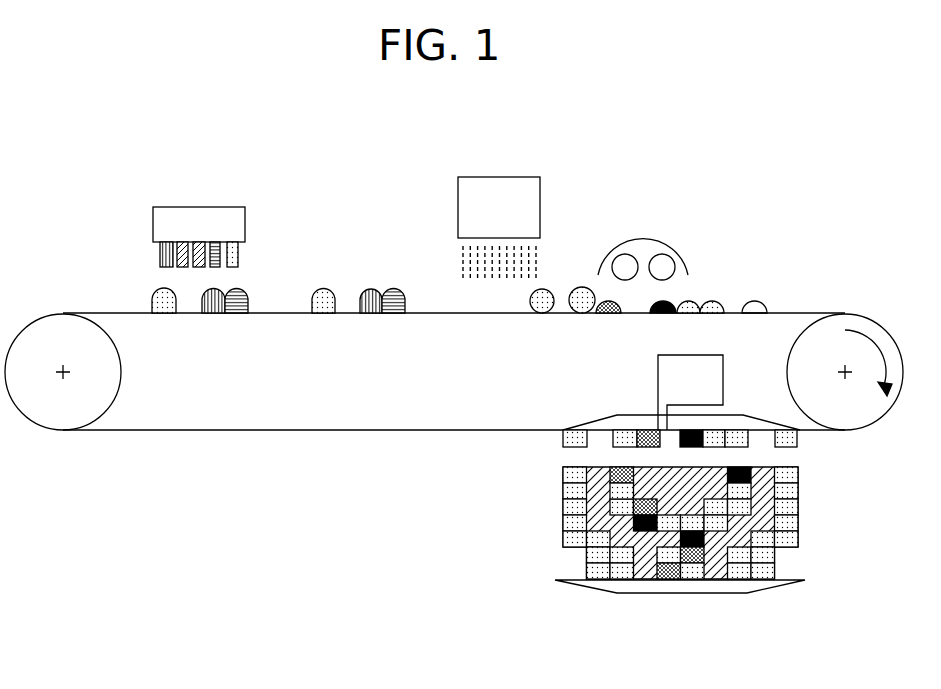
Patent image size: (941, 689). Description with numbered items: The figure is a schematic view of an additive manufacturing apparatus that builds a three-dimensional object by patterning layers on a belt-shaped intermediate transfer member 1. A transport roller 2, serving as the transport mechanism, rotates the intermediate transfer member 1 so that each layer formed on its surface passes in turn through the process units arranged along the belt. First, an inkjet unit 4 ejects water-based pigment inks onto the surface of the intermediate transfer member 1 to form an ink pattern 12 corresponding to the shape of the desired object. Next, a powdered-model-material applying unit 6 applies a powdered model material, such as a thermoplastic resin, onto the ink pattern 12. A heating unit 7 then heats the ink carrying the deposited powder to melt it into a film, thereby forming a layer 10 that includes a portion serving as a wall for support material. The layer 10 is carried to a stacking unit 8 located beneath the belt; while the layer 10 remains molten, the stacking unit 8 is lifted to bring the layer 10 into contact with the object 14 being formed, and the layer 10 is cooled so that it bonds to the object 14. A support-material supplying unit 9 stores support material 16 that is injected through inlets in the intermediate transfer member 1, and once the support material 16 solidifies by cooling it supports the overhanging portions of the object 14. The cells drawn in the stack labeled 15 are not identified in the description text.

The intermediate transfer member 1 is at (435, 314).
The transport roller 2 is at (107, 372).
The inkjet unit 4 is at (222, 215).
The powdered-model-material applying unit 6 is at (515, 181).
The heating unit 7 is at (650, 222).
The stacking unit 8 is at (642, 555).
The support-material supplying unit 9 is at (658, 375).
The layer 10 is at (740, 447).
The ink pattern 12 is at (323, 290).
The object being formed 14 is at (613, 508).
The container wall cells 15 is at (563, 492).
The support material 16 is at (665, 477).